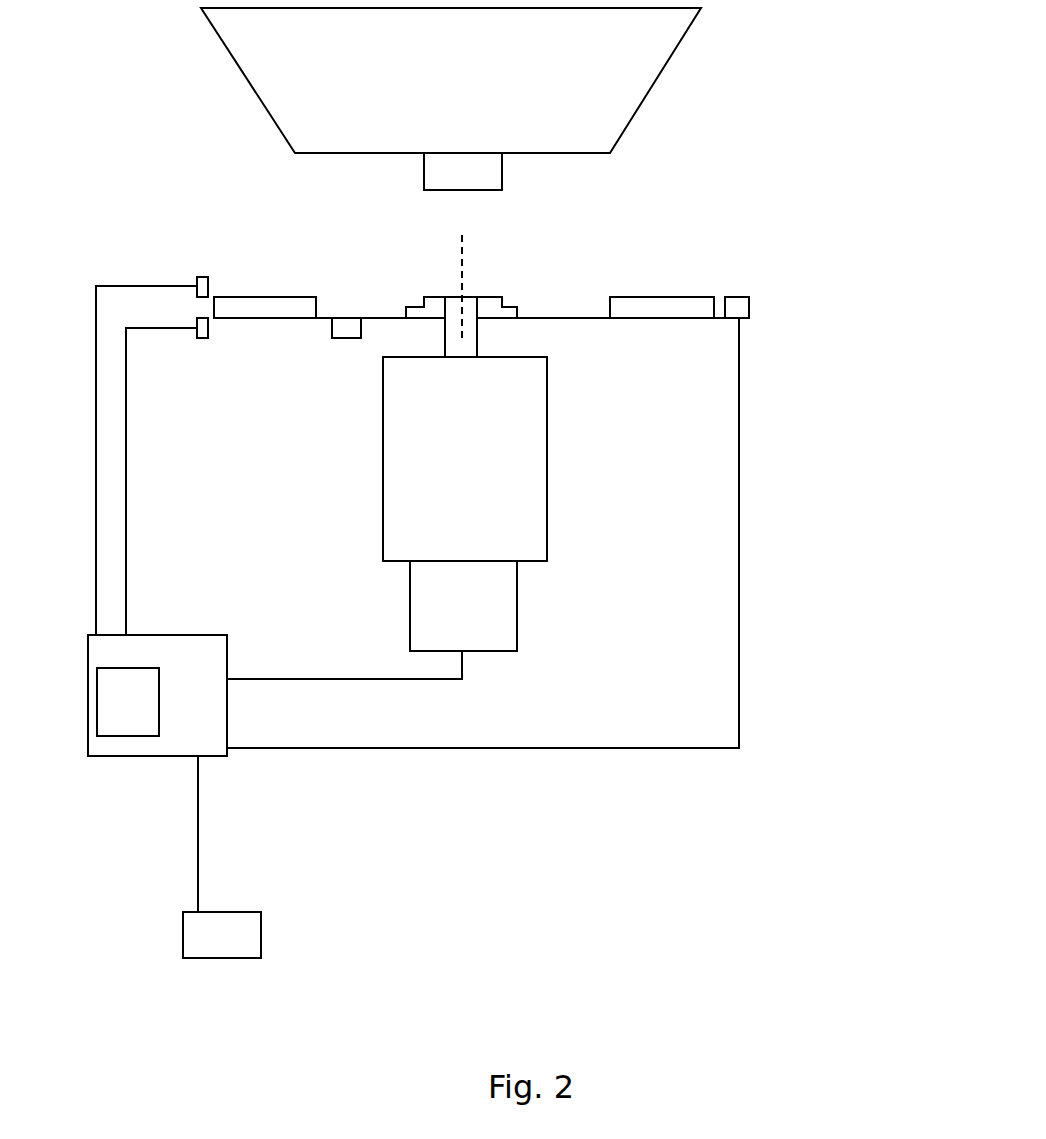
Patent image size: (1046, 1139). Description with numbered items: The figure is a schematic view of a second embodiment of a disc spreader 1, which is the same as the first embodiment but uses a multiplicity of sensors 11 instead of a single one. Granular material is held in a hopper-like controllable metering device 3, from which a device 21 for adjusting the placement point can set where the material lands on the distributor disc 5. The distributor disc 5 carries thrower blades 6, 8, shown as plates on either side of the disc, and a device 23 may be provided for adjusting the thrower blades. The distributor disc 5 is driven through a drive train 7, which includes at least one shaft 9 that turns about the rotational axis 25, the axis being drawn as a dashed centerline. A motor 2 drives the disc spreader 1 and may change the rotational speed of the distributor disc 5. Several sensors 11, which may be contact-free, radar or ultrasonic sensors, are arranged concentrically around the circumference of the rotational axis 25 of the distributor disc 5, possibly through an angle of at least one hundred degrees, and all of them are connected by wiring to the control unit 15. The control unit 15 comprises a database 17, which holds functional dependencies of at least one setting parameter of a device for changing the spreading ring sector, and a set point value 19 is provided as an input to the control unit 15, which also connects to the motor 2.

The disc spreader 1 is at (332, 477).
The motor 2 is at (517, 618).
The controllable metering device 3 is at (653, 82).
The distributor disc 5 is at (611, 287).
The thrower blade 6 is at (714, 297).
The drive train 7 is at (574, 365).
The thrower blade 8 is at (262, 297).
The shaft 9 is at (478, 328).
The sensor 11 is at (203, 277).
The control unit 15 is at (227, 756).
The database 17 is at (138, 736).
The set point value 19 is at (250, 936).
The device for adjusting the placement point 21 is at (420, 185).
The device for adjusting the thrower blades 23 is at (332, 338).
The rotational axis 25 is at (462, 257).